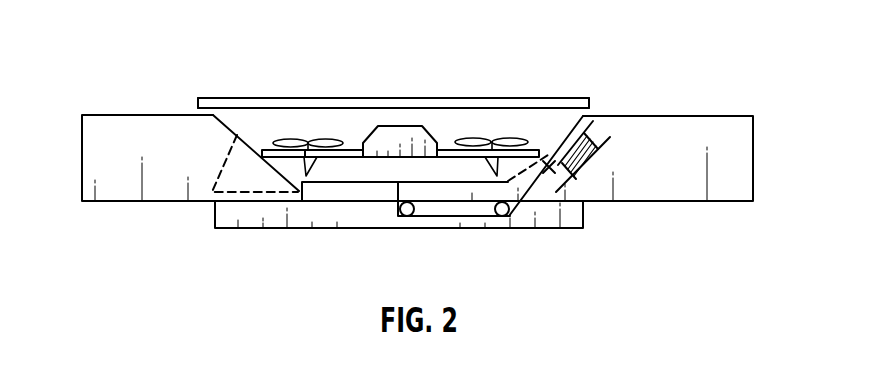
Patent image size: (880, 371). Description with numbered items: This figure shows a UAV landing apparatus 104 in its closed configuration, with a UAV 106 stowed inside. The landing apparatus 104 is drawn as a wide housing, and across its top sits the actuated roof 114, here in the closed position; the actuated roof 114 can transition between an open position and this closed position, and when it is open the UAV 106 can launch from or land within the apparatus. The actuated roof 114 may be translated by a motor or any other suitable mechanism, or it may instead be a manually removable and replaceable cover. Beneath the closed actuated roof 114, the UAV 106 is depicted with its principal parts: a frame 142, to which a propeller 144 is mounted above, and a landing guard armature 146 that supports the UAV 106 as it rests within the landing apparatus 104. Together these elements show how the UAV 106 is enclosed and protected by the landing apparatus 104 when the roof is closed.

The landing apparatus 104 is at (652, 88).
The UAV 106 is at (433, 77).
The actuated roof 114 is at (248, 98).
The propeller 144 is at (308, 142).
The landing guard armature 146 is at (270, 158).
The frame 142 is at (338, 167).